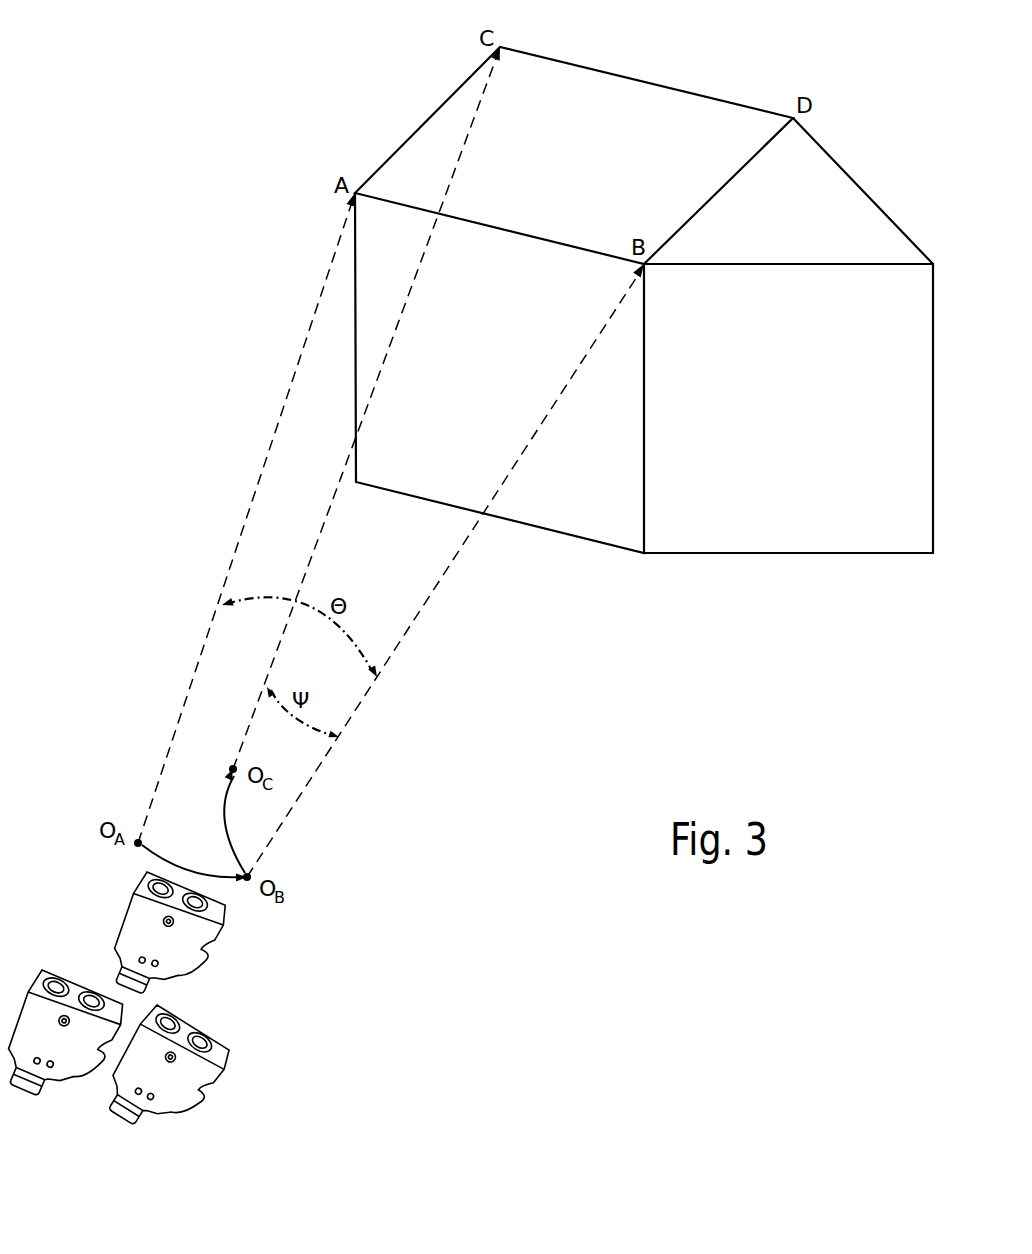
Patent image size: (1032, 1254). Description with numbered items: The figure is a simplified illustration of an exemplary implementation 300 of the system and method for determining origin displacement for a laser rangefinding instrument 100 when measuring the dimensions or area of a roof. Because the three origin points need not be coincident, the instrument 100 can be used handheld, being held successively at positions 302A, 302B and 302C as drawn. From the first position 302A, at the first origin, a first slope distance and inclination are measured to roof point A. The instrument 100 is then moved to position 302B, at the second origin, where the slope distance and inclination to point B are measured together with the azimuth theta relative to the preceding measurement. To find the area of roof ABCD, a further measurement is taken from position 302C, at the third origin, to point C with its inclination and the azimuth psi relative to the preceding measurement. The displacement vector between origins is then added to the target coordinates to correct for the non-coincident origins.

The exemplary implementation 300 is at (619, 693).
The position 302A is at (65, 1073).
The position 302B is at (221, 1043).
The position 302C is at (217, 942).
The laser rangefinding instrument 100 is at (325, 1076).